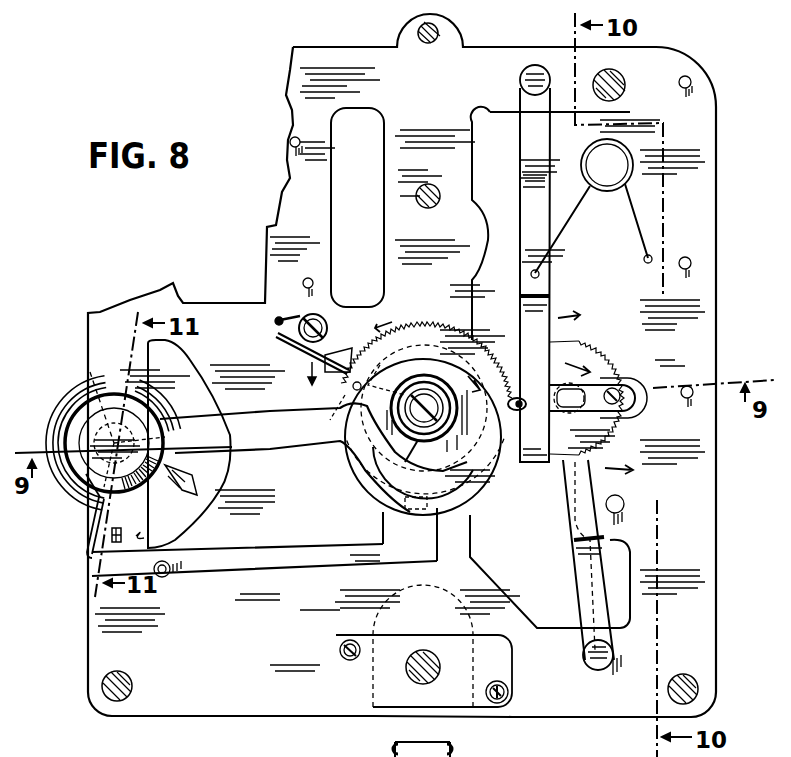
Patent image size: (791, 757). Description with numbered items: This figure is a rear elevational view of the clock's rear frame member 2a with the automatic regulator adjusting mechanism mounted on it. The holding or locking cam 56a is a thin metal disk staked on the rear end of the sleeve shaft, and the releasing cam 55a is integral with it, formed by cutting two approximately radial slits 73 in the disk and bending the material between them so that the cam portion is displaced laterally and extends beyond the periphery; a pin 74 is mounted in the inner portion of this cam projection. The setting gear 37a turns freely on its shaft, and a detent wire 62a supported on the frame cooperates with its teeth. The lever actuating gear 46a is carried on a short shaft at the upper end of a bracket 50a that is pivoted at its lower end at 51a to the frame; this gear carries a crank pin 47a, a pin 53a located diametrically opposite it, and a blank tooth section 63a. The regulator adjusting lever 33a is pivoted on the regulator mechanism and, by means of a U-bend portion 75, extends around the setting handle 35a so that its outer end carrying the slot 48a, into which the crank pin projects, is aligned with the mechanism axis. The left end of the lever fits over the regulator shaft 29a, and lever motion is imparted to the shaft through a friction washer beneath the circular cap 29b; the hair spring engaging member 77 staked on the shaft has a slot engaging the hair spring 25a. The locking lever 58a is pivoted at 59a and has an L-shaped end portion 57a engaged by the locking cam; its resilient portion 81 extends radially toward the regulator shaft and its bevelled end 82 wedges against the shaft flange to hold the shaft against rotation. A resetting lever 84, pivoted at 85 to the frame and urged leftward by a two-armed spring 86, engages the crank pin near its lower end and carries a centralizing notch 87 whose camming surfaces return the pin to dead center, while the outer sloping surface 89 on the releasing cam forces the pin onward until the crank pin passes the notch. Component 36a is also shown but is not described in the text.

The rear frame member 2a is at (297, 122).
The hair spring 25a is at (55, 400).
The regulator shaft 29a is at (88, 372).
The circular cap 29b is at (98, 477).
The regulator adjusting lever 33a is at (292, 442).
The setting handle 35a is at (412, 458).
The hub of gear 36a is at (423, 390).
The setting gear 37a is at (472, 332).
The lever actuating gear 46a is at (575, 350).
The crank pin 47a is at (528, 392).
The slot 48a is at (620, 412).
The bracket 50a is at (566, 500).
The bracket pivot 51a is at (584, 658).
The pin 53a is at (622, 390).
The releasing cam 55a is at (356, 356).
The locking cam 56a is at (440, 322).
The L-shaped end portion 57a is at (384, 520).
The locking lever 58a is at (280, 570).
The pivot 59a is at (160, 578).
The detent wire 62a is at (295, 348).
The blank tooth section 63a is at (620, 373).
The radial slits 73 is at (365, 405).
The pin 74 is at (348, 408).
The U-bend portion 75 is at (470, 495).
The hair spring engaging member 77 is at (193, 480).
The resilient portion 81 is at (94, 530).
The bevelled end 82 is at (100, 500).
The resetting lever 84 is at (548, 292).
The pivot 85 is at (521, 83).
The two-armed spring 86 is at (572, 200).
The centralizing notch 87 is at (510, 409).
The outer sloping surface 89 is at (322, 368).